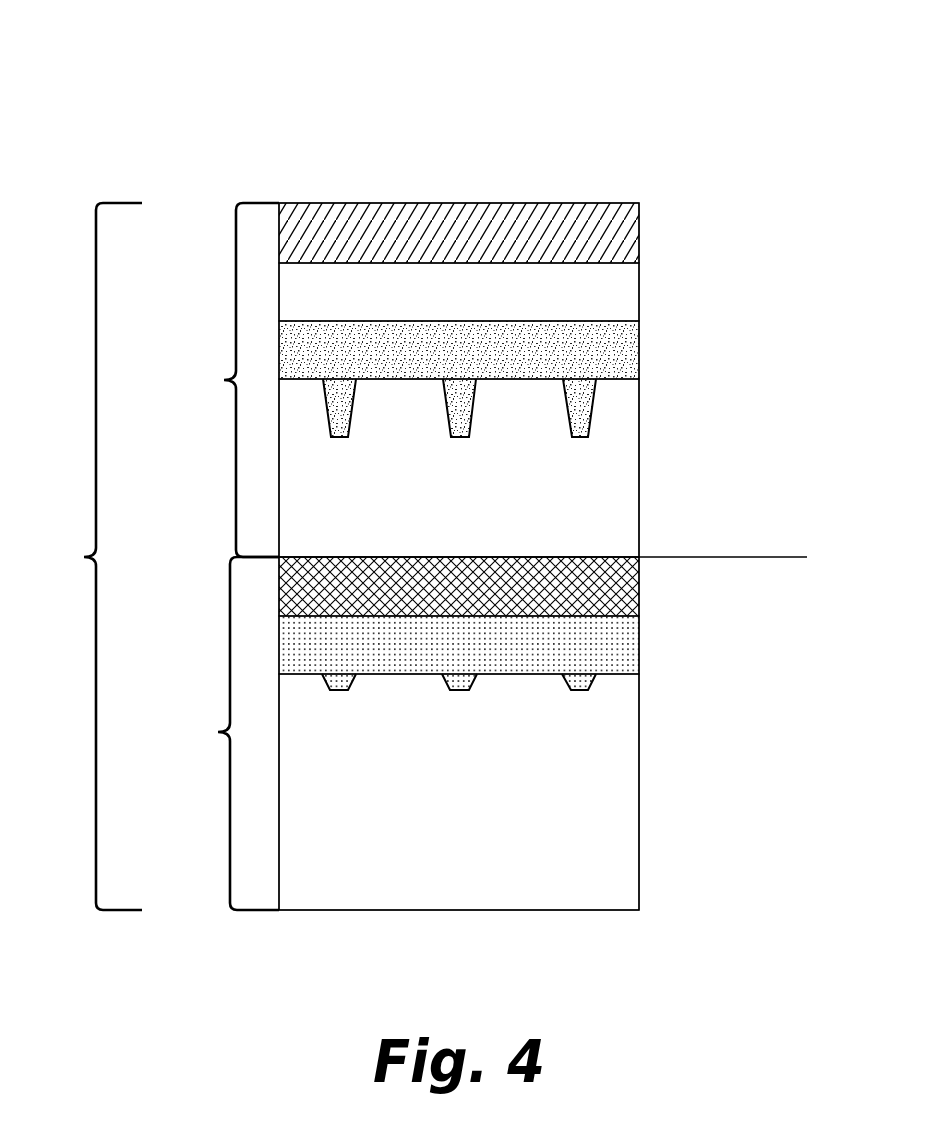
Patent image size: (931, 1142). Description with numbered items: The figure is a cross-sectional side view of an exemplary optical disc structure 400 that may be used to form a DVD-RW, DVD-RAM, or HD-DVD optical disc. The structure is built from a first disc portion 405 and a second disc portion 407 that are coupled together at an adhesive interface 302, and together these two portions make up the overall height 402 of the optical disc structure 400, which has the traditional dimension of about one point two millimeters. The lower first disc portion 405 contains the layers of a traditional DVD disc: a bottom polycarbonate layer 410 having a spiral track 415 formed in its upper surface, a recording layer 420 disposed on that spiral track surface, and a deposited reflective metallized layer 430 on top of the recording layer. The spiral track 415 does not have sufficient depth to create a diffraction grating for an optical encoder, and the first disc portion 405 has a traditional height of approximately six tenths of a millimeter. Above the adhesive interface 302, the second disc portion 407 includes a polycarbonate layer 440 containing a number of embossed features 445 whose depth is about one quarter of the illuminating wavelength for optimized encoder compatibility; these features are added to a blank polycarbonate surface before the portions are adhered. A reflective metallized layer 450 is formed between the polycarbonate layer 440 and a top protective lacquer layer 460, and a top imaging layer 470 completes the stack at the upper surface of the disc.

The optical disc structure 400 is at (790, 126).
The overall height 402 is at (80, 556).
The first disc portion 405 is at (216, 733).
The second disc portion 407 is at (222, 380).
The bottom polycarbonate layer 410 is at (639, 793).
The spiral track 415 is at (639, 674).
The recording layer 420 is at (639, 655).
The reflective metallized layer 430 is at (639, 590).
The adhesive interface 302 is at (568, 557).
The polycarbonate layer 440 is at (639, 463).
The embossed features 445 is at (639, 379).
The reflective metallized layer 450 is at (639, 358).
The top protective lacquer layer 460 is at (639, 295).
The top imaging layer 470 is at (639, 237).